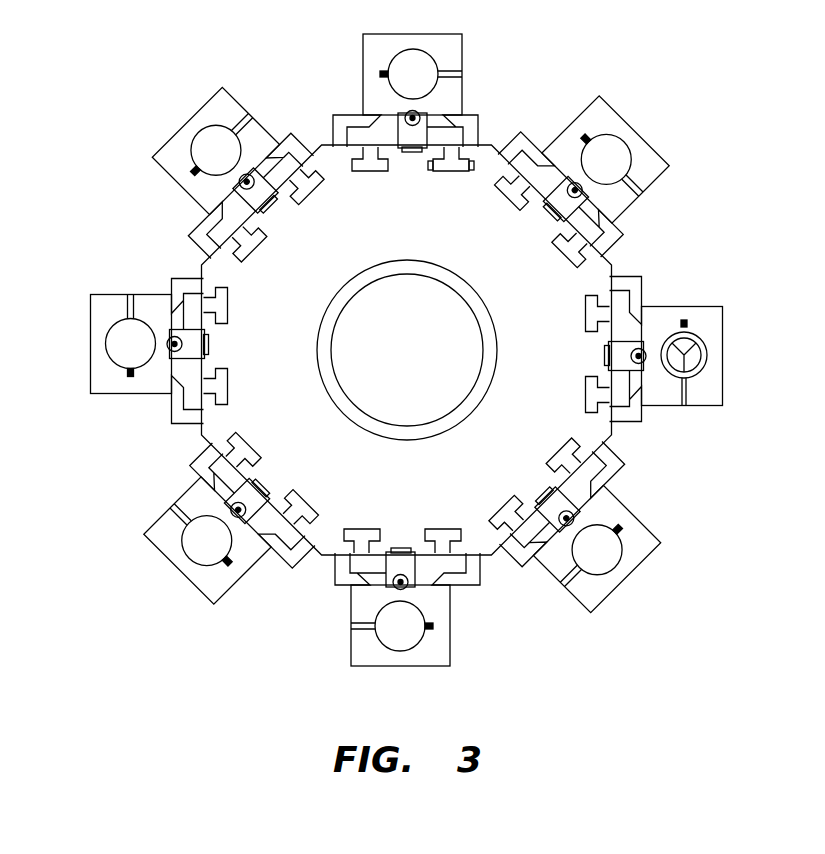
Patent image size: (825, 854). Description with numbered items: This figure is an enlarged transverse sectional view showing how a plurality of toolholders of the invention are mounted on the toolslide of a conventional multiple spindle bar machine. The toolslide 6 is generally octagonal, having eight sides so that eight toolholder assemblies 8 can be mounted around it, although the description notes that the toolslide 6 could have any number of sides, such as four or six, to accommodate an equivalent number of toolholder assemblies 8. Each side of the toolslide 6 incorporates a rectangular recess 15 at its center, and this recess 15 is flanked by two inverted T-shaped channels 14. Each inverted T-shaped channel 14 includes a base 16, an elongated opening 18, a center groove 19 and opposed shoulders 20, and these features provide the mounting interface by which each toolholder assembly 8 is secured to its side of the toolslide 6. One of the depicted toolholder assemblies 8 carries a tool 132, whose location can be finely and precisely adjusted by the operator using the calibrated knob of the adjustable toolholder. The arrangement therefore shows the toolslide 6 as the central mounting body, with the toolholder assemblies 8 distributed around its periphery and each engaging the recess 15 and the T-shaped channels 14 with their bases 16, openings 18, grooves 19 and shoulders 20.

The toolslide 6 is at (570, 285).
The toolholder assembly 8 is at (375, 48).
The inverted T-shaped channel 14 is at (367, 142).
The rectangular recess 15 is at (558, 213).
The base 16 is at (412, 159).
The elongated opening 18 is at (368, 170).
The center groove 19 is at (452, 155).
The opposed shoulders 20 is at (447, 168).
The tool 132 is at (693, 347).